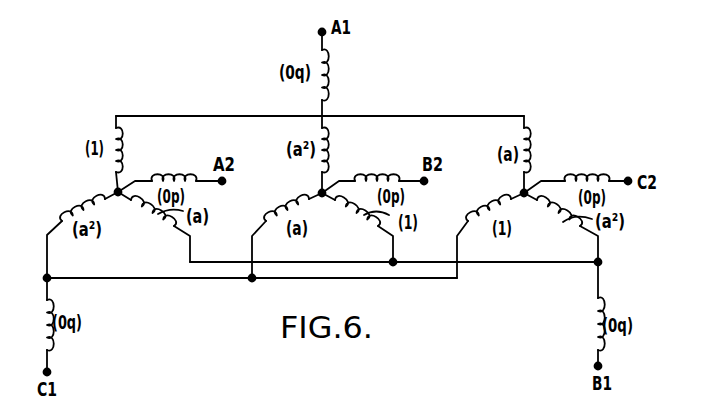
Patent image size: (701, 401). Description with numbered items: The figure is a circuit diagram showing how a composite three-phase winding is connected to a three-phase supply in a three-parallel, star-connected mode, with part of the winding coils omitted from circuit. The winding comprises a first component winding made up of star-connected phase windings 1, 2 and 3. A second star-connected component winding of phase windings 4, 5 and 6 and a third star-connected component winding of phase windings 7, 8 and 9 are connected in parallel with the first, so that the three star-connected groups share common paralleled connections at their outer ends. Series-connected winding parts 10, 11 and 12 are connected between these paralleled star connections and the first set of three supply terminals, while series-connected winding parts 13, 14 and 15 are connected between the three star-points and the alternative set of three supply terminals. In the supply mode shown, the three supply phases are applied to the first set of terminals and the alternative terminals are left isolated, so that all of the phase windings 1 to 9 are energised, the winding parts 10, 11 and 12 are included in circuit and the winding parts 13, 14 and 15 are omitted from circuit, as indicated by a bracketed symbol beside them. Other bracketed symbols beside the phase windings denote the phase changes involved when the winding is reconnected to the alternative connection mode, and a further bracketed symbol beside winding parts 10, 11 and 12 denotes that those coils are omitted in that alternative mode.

The phase winding 1 is at (123, 154).
The phase winding 2 is at (154, 227).
The phase winding 3 is at (82, 233).
The phase winding 4 is at (331, 160).
The phase winding 5 is at (357, 227).
The phase winding 6 is at (287, 235).
The phase winding 7 is at (535, 154).
The phase winding 8 is at (561, 227).
The phase winding 9 is at (490, 234).
The series-connected winding part 10 is at (336, 79).
The series-connected winding part 11 is at (588, 316).
The series-connected winding part 12 is at (37, 327).
The series-connected winding part 13 is at (172, 171).
The series-connected winding part 14 is at (375, 172).
The series-connected winding part 15 is at (578, 172).